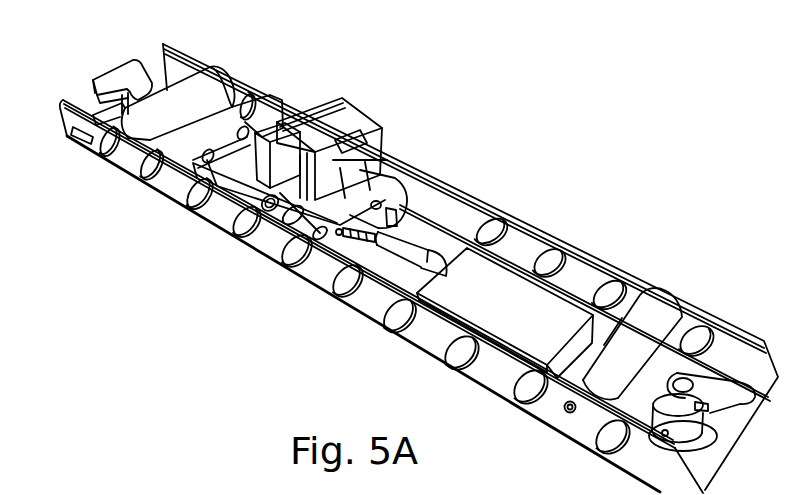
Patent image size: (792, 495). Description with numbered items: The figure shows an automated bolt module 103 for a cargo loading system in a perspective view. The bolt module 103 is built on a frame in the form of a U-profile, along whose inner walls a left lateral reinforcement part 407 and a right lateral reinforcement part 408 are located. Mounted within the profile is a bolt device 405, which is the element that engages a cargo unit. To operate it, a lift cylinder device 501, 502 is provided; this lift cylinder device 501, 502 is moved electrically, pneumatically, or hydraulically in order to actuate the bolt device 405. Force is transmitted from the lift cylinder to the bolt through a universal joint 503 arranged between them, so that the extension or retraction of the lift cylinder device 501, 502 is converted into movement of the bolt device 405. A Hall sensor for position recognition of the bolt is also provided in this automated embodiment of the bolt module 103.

The bolt module 103 is at (694, 204).
The bolt device 405 is at (362, 121).
The left lateral reinforcement part 407 is at (268, 150).
The right lateral reinforcement part 408 is at (217, 183).
The lift cylinder device 501 is at (495, 277).
The lift cylinder device 502 is at (410, 214).
The universal joint 503 is at (350, 245).